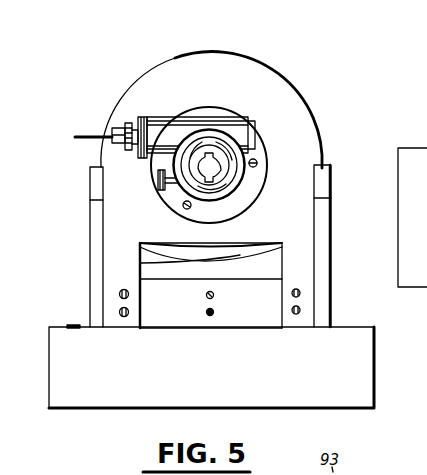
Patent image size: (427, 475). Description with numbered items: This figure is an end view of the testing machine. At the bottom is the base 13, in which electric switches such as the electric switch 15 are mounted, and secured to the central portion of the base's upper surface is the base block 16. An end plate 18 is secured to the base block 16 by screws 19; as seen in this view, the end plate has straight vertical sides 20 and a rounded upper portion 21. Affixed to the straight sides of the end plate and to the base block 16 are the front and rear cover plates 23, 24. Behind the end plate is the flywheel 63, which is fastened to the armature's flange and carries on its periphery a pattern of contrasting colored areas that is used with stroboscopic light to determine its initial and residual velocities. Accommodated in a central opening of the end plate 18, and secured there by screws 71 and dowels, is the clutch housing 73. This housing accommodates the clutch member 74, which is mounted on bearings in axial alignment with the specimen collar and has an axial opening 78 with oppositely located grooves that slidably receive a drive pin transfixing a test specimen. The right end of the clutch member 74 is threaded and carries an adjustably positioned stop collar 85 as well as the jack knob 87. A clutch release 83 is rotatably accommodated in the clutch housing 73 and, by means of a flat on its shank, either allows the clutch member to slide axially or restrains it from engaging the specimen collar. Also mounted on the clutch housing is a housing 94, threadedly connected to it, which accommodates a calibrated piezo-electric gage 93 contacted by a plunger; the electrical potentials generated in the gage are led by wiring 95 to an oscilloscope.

The base 13 is at (365, 380).
The electric switch 15 is at (75, 325).
The base block 16 is at (275, 320).
The end plate 18 is at (268, 60).
The screws 19 is at (208, 311).
The straight vertical sides 20 is at (100, 203).
The rounded upper portion 21 is at (172, 63).
The front cover plate 23 is at (95, 242).
The rear cover plate 24 is at (325, 233).
The flywheel 63 is at (140, 267).
The screws 71 is at (257, 160).
The clutch housing 73 is at (205, 127).
The clutch member 74 is at (223, 150).
The axial opening 78 is at (205, 163).
The clutch release 83 is at (150, 183).
The stop collar 85 is at (223, 180).
The jack knob 87 is at (218, 193).
The piezo-electric gage 93 is at (134, 106).
The housing 94 is at (137, 157).
The wiring 95 is at (87, 128).